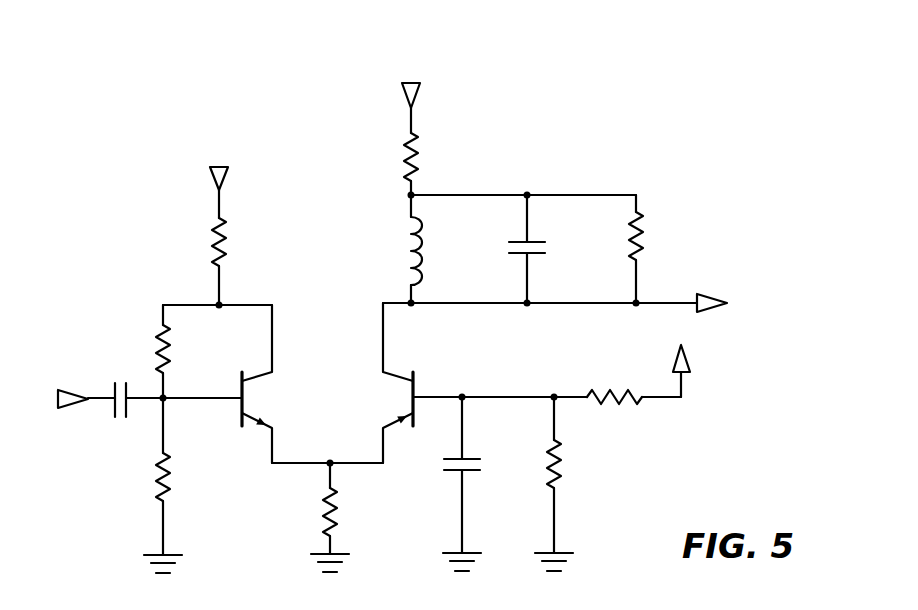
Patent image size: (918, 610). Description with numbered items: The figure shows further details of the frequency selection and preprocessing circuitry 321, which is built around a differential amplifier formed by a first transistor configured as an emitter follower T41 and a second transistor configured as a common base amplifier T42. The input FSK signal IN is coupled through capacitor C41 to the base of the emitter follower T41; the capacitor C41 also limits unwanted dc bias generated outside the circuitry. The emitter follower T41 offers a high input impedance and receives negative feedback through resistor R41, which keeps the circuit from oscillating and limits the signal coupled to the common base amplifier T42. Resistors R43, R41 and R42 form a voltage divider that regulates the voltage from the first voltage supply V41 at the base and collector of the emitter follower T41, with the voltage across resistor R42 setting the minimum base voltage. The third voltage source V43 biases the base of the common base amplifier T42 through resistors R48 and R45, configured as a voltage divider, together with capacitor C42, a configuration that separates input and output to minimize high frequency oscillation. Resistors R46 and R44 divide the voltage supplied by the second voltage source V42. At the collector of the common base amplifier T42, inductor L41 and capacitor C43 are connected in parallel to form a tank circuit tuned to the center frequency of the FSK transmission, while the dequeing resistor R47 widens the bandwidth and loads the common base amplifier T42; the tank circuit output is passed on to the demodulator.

The frequency selection and preprocessing circuitry 321 is at (213, 66).
The resistor R41 is at (188, 351).
The resistor R42 is at (183, 485).
The resistor R43 is at (245, 261).
The resistor R44 is at (348, 517).
The resistor R45 is at (572, 484).
The resistor R46 is at (437, 164).
The dequeing resistor R47 is at (662, 249).
The resistor R48 is at (617, 381).
The capacitor C41 is at (130, 388).
The capacitor C42 is at (483, 484).
The capacitor C43 is at (553, 249).
The inductor L41 is at (443, 249).
The emitter follower T41 is at (230, 384).
The common base amplifier T42 is at (406, 383).
The first voltage supply V41 is at (221, 176).
The second voltage source V42 is at (410, 95).
The third voltage source V43 is at (683, 357).
The input FSK signal IN is at (71, 398).